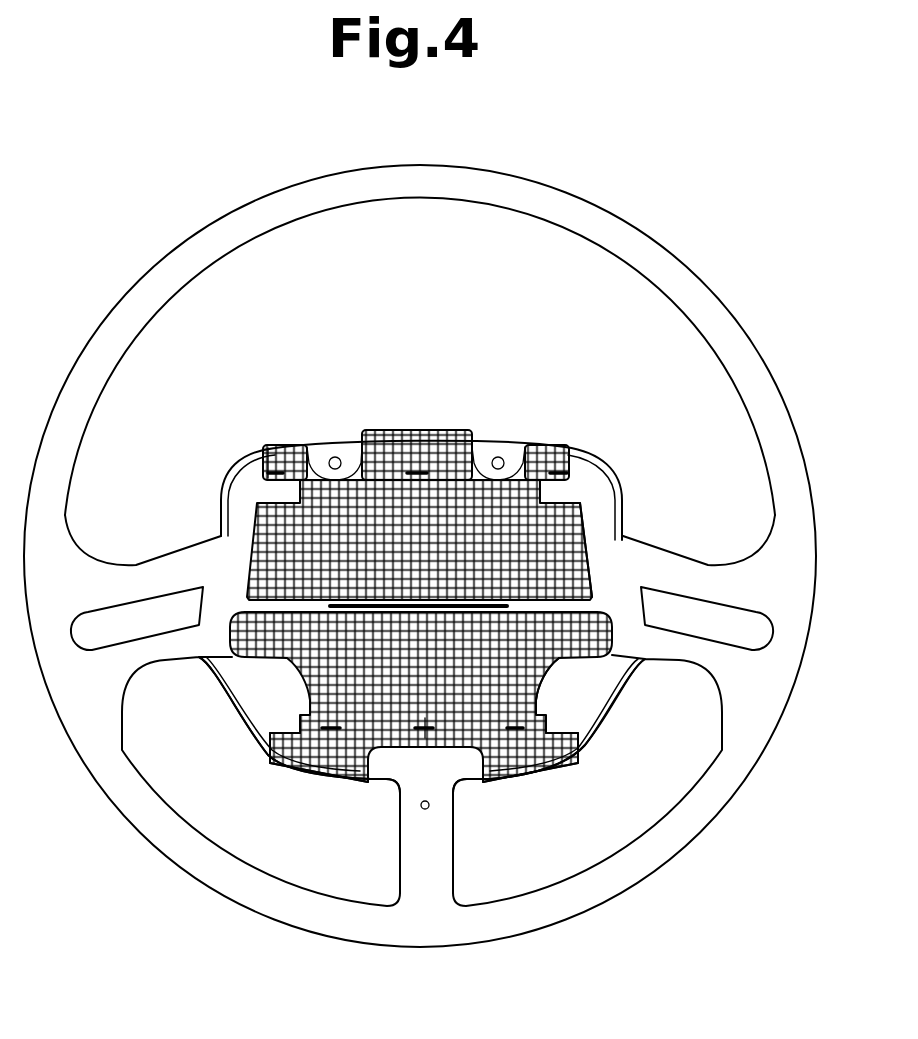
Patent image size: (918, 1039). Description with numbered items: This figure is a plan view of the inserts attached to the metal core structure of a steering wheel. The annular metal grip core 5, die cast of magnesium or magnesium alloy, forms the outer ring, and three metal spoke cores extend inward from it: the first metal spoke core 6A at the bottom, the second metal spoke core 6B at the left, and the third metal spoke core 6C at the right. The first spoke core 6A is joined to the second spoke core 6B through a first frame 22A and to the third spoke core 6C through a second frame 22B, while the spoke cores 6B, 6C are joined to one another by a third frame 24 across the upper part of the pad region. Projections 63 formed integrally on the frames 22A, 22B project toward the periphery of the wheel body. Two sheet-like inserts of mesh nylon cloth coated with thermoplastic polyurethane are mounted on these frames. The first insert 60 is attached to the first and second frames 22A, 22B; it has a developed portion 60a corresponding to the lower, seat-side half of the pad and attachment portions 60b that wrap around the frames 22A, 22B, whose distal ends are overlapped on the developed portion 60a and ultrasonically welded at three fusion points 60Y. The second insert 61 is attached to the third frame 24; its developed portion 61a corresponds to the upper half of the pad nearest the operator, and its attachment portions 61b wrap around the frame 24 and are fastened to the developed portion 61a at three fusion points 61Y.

The metal grip core 5 is at (690, 297).
The first metal spoke core 6A is at (442, 878).
The second metal spoke core 6B is at (170, 665).
The third metal spoke core 6C is at (672, 663).
The first frame 22A is at (237, 741).
The second frame 22B is at (607, 741).
The third frame 24 is at (222, 490).
The first insert 60 is at (289, 685).
The developed portion of first insert 60a is at (550, 670).
The attachment portions of first insert 60b is at (305, 777).
The fusion points 60Y is at (331, 732).
The second insert 61 is at (244, 532).
The developed portion of second insert 61a is at (587, 517).
The attachment portions of second insert 61b is at (448, 430).
The fusion points 61Y is at (264, 447).
The projections 63 is at (367, 785).